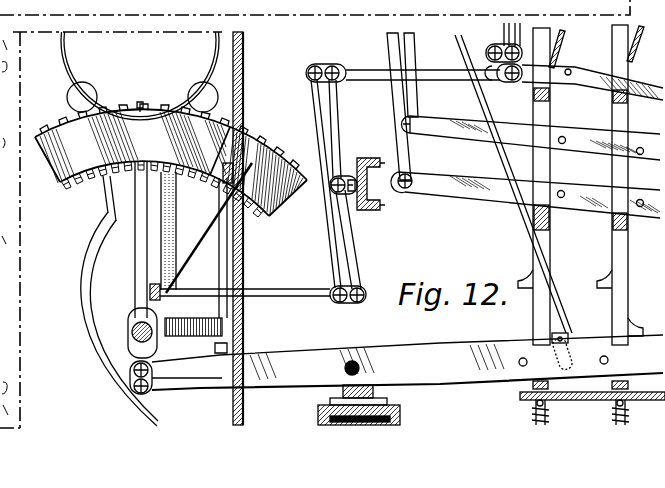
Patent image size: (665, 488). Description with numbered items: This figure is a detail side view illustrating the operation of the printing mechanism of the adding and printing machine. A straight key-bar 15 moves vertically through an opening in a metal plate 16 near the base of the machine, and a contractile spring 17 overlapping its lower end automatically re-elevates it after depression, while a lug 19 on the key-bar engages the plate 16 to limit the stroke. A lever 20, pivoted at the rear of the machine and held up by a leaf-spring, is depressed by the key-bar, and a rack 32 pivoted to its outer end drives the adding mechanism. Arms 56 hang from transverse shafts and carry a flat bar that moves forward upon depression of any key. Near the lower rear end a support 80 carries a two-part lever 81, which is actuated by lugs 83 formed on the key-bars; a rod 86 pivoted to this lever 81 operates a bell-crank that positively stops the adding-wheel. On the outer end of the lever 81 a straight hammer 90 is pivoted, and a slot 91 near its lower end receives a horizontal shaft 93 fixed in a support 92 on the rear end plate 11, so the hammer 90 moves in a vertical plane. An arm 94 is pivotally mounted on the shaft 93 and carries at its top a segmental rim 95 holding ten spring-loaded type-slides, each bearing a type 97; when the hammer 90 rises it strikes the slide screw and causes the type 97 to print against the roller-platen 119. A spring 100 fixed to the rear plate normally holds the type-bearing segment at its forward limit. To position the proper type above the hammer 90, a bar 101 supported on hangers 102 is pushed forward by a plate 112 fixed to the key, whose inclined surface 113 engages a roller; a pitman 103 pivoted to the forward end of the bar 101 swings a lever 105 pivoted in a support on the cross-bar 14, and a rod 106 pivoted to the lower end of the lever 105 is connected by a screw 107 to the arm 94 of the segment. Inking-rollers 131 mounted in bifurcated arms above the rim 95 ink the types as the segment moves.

The rear end plate 11 is at (245, 53).
The cross-bar 14 is at (381, 206).
The key-bar 15 is at (612, 112).
The metal plate 16 is at (582, 397).
The contractile spring 17 is at (530, 409).
The lug 19 is at (636, 335).
The lever 20 is at (444, 174).
The rack 32 is at (392, 92).
The arms 56 is at (498, 49).
The support 80 is at (392, 400).
The lever 81 is at (293, 354).
The lugs 83 is at (520, 277).
The rod 86 is at (520, 215).
The hammer 90 is at (148, 258).
The slot 91 is at (128, 318).
The support 92 is at (158, 362).
The shaft 93 is at (133, 342).
The arm 94 is at (117, 208).
The segmental rim 95 is at (171, 160).
The type 97 is at (58, 126).
The spring 100 is at (103, 293).
The bar 101 is at (588, 63).
The hangers 102 is at (505, 38).
The pitman 103 is at (462, 73).
The lever 105 is at (358, 272).
The rod 106 is at (283, 290).
The screw 107 is at (196, 327).
The plate 112 is at (628, 44).
The inclined surface 113 is at (565, 37).
The roller-platen 119 is at (140, 76).
The inking-rollers 131 is at (71, 91).